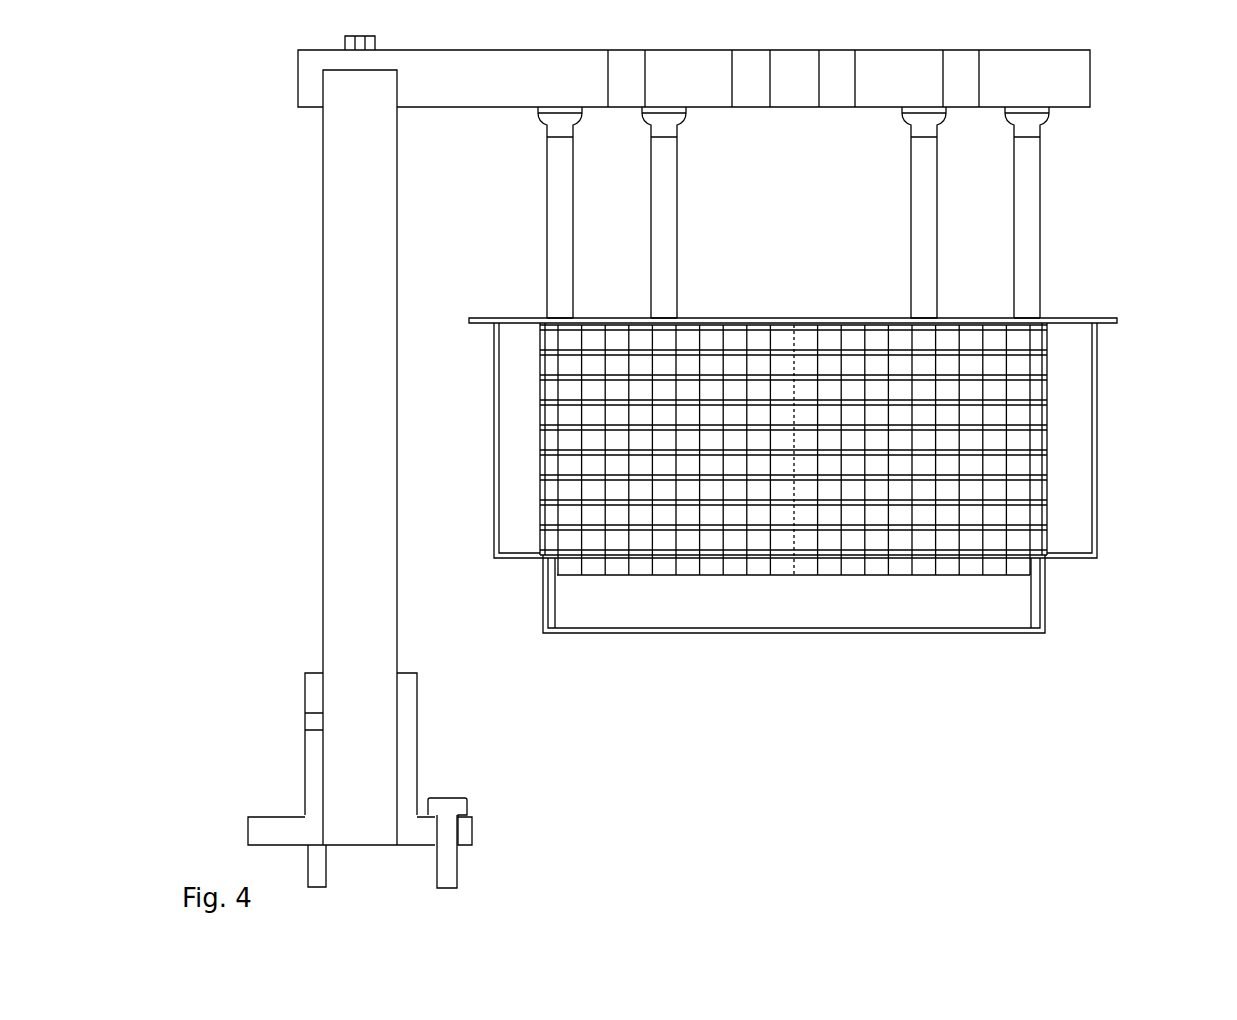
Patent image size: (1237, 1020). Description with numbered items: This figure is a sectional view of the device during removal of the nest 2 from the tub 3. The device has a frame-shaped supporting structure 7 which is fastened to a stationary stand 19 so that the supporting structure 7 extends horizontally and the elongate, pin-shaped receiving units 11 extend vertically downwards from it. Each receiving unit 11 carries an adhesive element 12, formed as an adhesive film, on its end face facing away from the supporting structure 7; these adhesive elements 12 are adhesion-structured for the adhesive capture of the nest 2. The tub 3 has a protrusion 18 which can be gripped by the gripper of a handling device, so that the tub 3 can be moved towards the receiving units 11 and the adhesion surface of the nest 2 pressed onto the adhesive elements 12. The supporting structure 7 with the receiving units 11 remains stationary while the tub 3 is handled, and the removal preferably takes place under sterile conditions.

The supporting structure 7 is at (1038, 73).
The stationary stand 19 is at (355, 316).
The receiving units 11 is at (666, 232).
The adhesive element 12 is at (928, 320).
The protrusion 18 is at (1108, 318).
The nest 2 is at (997, 325).
The tub 3 is at (1092, 510).